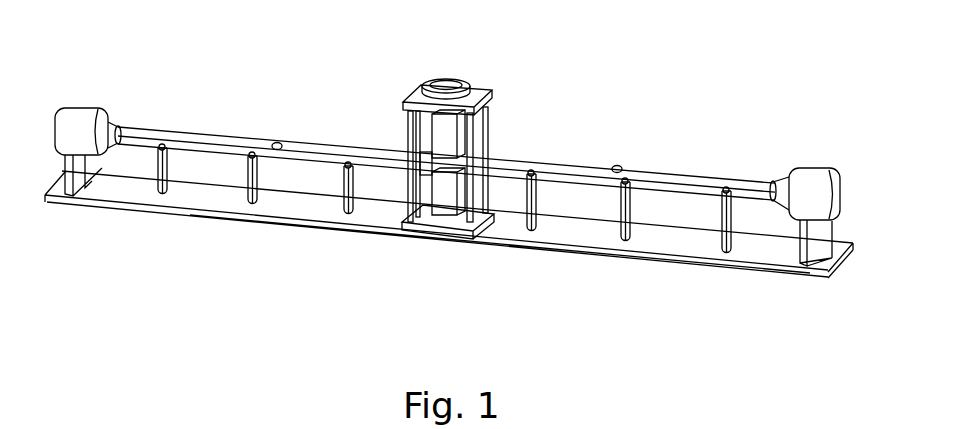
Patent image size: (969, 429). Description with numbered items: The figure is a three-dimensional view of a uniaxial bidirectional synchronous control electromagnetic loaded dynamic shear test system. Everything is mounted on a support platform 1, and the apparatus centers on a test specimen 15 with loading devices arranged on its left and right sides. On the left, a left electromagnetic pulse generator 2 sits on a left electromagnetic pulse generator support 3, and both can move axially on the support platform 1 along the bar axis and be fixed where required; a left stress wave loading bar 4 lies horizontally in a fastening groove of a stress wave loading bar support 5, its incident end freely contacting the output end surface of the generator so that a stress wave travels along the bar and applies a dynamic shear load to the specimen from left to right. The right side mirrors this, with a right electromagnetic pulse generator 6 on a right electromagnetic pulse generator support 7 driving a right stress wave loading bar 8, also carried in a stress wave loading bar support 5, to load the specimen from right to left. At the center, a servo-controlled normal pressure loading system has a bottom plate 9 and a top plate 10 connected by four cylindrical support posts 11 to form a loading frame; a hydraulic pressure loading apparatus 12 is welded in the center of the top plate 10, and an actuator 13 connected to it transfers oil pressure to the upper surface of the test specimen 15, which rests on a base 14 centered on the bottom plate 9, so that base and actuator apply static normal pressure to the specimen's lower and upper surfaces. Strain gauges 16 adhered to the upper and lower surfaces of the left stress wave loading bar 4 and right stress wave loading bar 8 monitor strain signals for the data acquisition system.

The support platform 1 is at (53, 203).
The left electromagnetic pulse generator 2 is at (85, 120).
The left electromagnetic pulse generator support 3 is at (72, 188).
The left stress wave loading bar 4 is at (187, 133).
The stress wave loading bar support 5 is at (250, 192).
The right electromagnetic pulse generator 6 is at (805, 180).
The right electromagnetic pulse generator support 7 is at (805, 250).
The right stress wave loading bar 8 is at (675, 177).
The bottom plate 9 is at (432, 226).
The top plate 10 is at (490, 97).
The support post 11 is at (488, 128).
The hydraulic pressure loading apparatus 12 is at (448, 90).
The actuator 13 is at (443, 138).
The base 14 is at (448, 193).
The test specimen 15 is at (420, 175).
The strain gauge 16 is at (277, 143).